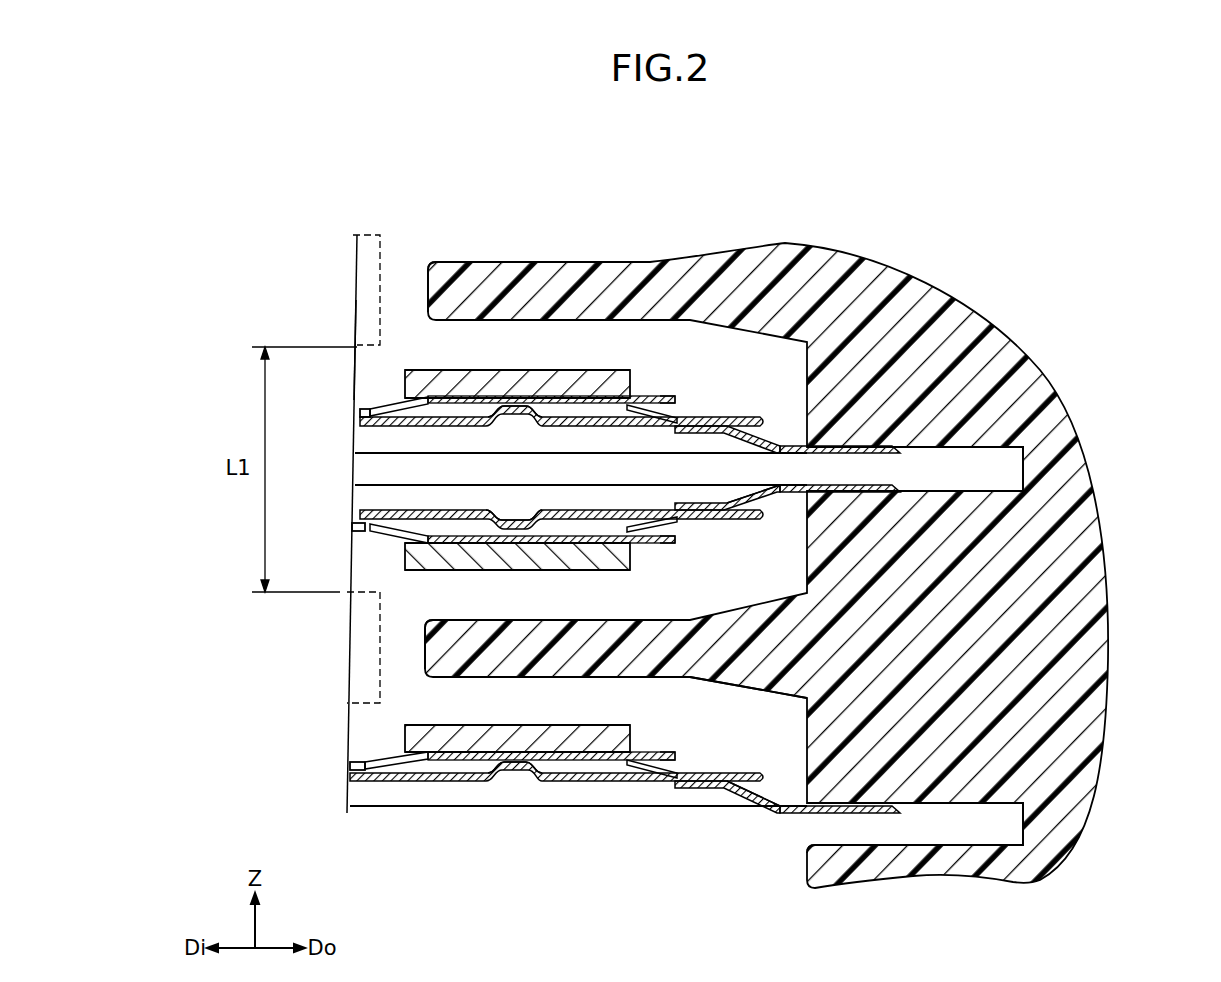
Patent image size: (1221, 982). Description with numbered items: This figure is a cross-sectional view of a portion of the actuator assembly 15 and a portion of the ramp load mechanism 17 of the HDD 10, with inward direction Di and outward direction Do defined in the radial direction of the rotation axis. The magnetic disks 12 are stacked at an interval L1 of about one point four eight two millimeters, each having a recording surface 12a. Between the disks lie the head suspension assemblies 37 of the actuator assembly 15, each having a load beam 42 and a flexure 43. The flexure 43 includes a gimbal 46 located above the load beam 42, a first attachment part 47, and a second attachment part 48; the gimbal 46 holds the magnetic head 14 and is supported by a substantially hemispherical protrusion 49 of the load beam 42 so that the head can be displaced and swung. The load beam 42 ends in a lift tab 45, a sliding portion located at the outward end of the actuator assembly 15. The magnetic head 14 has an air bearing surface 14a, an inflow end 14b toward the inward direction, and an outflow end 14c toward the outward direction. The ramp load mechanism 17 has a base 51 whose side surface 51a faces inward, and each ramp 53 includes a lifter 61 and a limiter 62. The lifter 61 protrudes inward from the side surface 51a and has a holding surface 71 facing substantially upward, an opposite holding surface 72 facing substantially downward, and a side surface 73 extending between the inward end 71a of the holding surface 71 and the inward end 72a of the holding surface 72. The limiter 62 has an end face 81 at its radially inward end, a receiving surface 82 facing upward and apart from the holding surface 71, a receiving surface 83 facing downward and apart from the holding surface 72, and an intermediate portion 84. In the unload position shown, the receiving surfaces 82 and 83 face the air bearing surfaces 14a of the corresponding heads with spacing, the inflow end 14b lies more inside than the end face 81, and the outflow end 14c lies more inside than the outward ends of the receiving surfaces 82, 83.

The HDD 10 is at (310, 198).
The magnetic disk 12 is at (386, 236).
The recording surface 12a is at (357, 348).
The magnetic head 14 is at (555, 395).
The air bearing surface 14a is at (452, 570).
The inflow end 14b is at (404, 556).
The outflow end 14c is at (645, 548).
The actuator assembly 15 is at (578, 548).
The head suspension assembly 37 is at (678, 474).
The ramp load mechanism 17 is at (714, 556).
The load beam 42 is at (465, 445).
The flexure 43 is at (705, 500).
The lift tab 45 is at (866, 470).
The gimbal 46 is at (606, 396).
The first attachment part 47 is at (360, 412).
The second attachment part 48 is at (690, 783).
The protrusion 49 is at (512, 406).
The base 51 is at (1028, 470).
The side surface 51a is at (1013, 449).
The ramp 53 is at (714, 556).
The lifter 61 is at (958, 312).
The limiter 62 is at (590, 280).
The holding surface 71 is at (1000, 492).
The end of holding surface 71a is at (800, 490).
The holding surface 72 is at (1027, 818).
The end of holding surface 72a is at (810, 843).
The side surface 73 is at (782, 803).
The end face 81 is at (425, 660).
The receiving surface 82 is at (660, 624).
The receiving surface 83 is at (652, 680).
The intermediate portion 84 is at (750, 688).